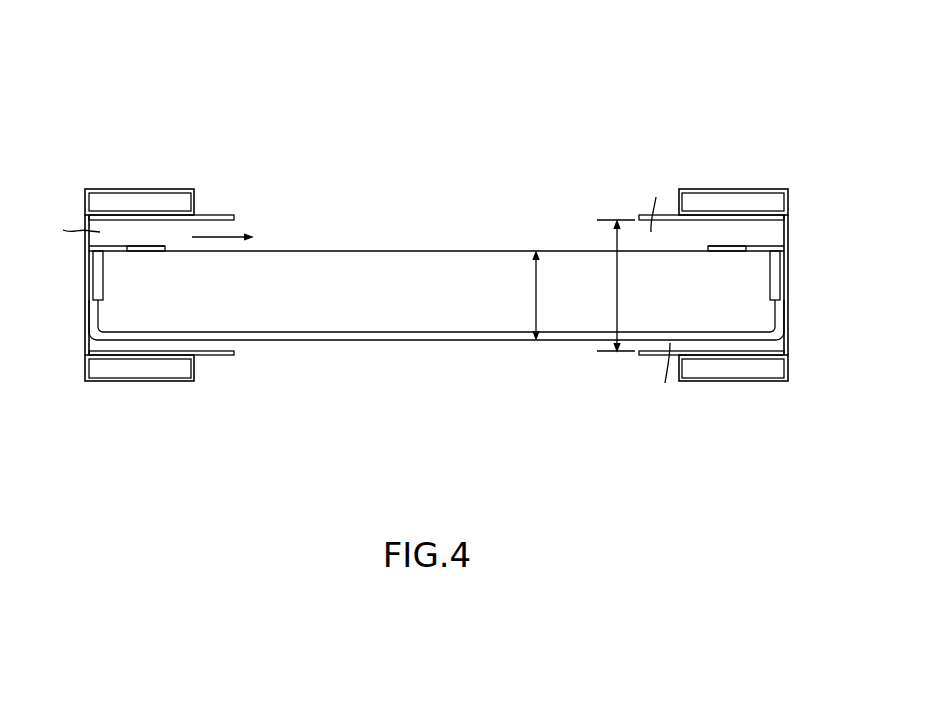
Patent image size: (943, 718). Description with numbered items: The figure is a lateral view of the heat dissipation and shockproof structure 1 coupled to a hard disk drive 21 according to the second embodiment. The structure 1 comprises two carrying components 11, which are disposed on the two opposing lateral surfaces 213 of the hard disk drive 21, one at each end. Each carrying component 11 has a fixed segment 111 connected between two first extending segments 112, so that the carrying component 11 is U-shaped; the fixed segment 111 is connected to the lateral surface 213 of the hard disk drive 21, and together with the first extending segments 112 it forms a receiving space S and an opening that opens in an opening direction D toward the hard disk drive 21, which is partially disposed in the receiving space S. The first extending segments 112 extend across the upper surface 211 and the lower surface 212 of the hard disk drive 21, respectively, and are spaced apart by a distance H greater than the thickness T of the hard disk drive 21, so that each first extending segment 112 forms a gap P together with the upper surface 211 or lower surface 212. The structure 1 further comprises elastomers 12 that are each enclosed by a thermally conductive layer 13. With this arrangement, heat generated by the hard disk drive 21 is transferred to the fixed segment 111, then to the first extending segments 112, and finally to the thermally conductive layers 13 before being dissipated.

The heat dissipation and shockproof structure 1 is at (121, 98).
The carrying component 11 is at (87, 218).
The elastomer 12 is at (131, 198).
The thermally conductive layer 13 is at (168, 190).
The hard disk drive 21 is at (436, 296).
The fixed segment 111 is at (87, 286).
The first extending segment 112 is at (215, 215).
The upper surface 211 is at (458, 252).
The lower surface 212 is at (458, 340).
The lateral surface 213 is at (89, 275).
The receiving space S is at (75, 231).
The opening direction D is at (231, 238).
The thickness T is at (545, 295).
The distance H is at (614, 285).
The gap P is at (660, 290).